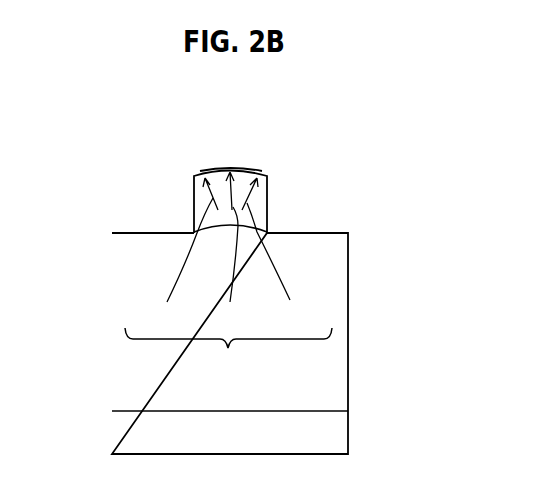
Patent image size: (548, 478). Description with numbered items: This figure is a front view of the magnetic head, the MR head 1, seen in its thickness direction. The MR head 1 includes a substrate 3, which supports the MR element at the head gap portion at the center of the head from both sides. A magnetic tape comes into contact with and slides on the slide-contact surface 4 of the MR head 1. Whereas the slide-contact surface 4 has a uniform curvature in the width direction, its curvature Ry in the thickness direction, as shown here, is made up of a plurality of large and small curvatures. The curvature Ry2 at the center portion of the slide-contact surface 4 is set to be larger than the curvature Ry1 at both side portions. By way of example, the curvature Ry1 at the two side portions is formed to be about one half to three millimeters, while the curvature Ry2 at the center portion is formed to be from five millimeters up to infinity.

The MR head 1 is at (108, 235).
The substrate 3 is at (262, 210).
The slide-contact surface 4 is at (235, 169).
The curvature at both side portions Ry1 is at (230, 321).
The curvature at center portion Ry2 is at (230, 321).
The curvature in a thickness direction Ry is at (228, 358).